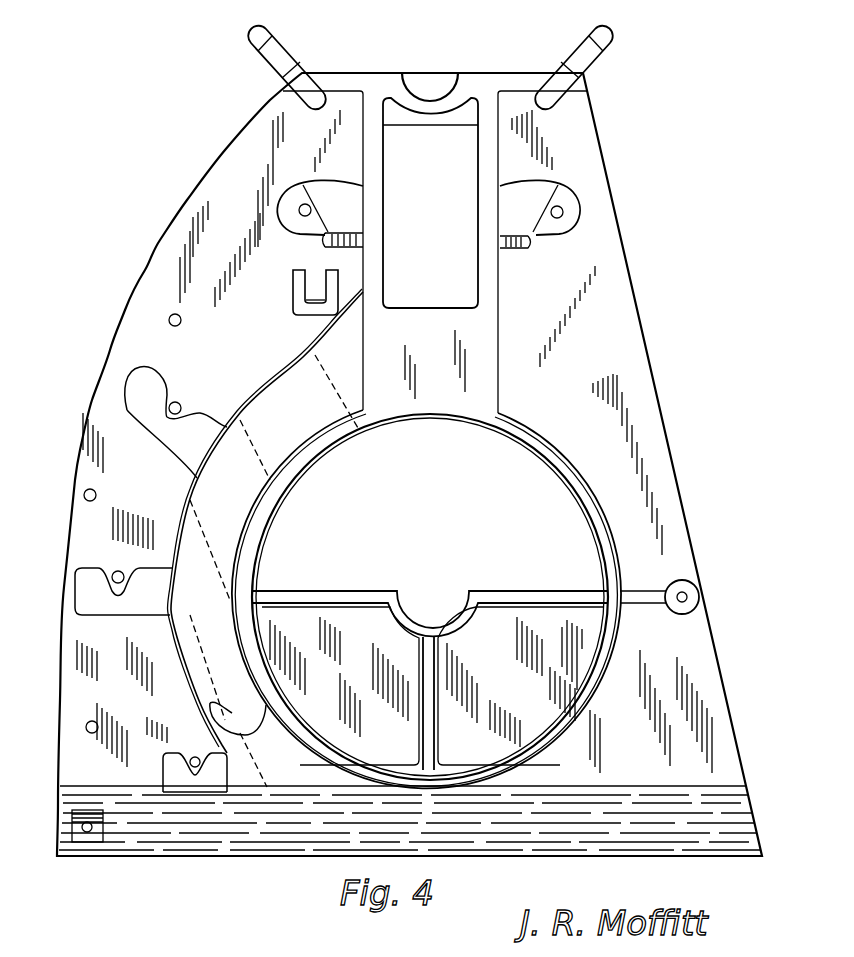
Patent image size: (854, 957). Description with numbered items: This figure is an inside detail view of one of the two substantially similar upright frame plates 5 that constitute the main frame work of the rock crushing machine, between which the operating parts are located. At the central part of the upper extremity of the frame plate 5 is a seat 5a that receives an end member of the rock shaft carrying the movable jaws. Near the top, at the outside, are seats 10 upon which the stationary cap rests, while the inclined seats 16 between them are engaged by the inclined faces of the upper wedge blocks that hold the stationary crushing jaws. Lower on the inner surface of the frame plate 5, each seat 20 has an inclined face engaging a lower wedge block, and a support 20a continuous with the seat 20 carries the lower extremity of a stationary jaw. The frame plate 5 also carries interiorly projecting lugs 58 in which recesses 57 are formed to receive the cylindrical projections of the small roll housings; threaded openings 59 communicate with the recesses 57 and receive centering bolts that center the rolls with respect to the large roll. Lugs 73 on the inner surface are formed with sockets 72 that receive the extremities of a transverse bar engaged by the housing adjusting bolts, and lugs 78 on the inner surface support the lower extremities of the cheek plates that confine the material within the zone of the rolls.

The frame plate 5 is at (409, 464).
The seat 5a is at (413, 89).
The seat 10 is at (266, 39).
The seat 16 is at (291, 72).
The seat 20 is at (286, 200).
The support 20a is at (360, 240).
The recess 57 is at (165, 420).
The lug 58 is at (140, 380).
The threaded opening 59 is at (178, 403).
The socket 72 is at (313, 297).
The lug 73 is at (293, 290).
The lug 78 is at (253, 729).